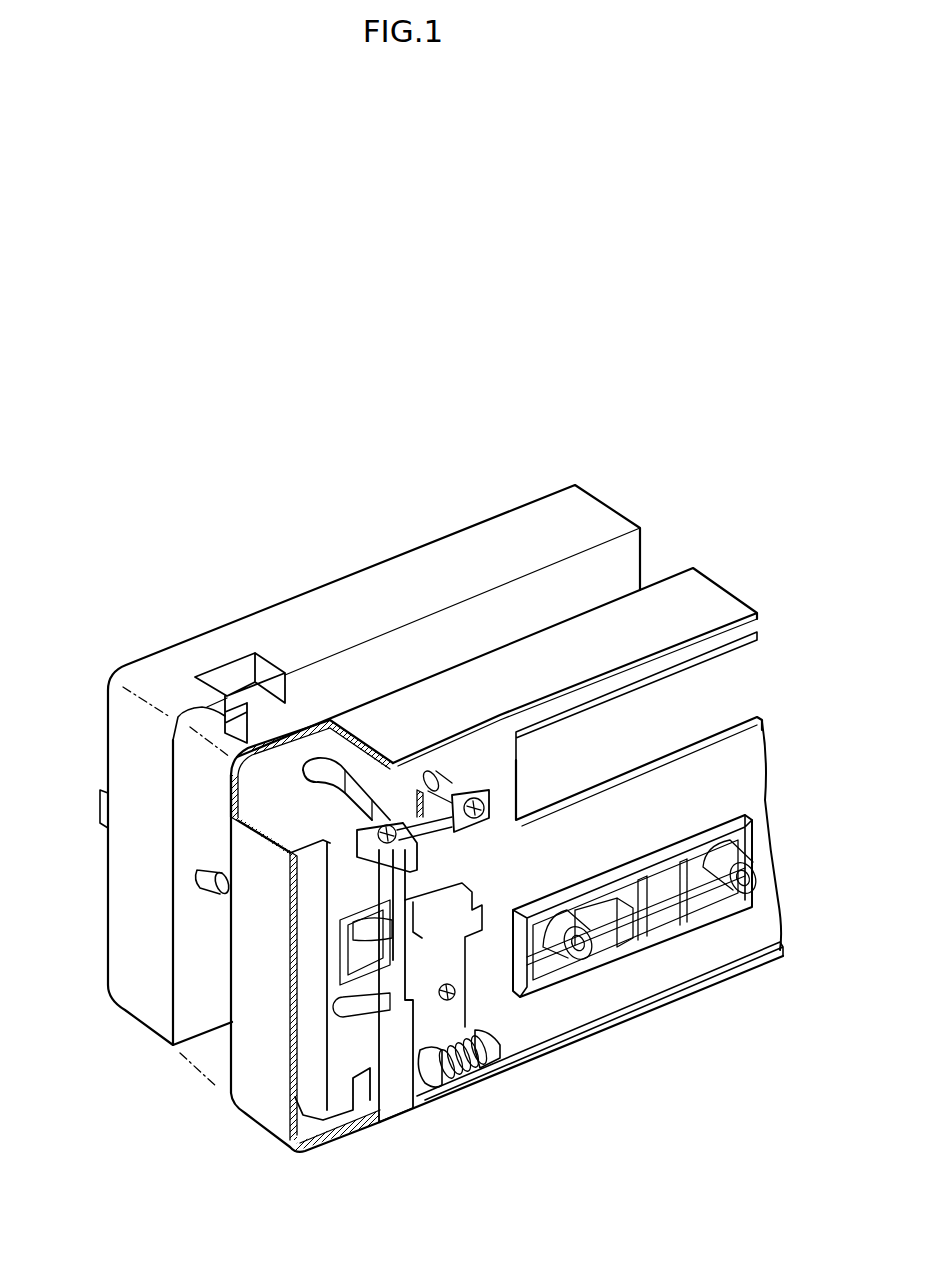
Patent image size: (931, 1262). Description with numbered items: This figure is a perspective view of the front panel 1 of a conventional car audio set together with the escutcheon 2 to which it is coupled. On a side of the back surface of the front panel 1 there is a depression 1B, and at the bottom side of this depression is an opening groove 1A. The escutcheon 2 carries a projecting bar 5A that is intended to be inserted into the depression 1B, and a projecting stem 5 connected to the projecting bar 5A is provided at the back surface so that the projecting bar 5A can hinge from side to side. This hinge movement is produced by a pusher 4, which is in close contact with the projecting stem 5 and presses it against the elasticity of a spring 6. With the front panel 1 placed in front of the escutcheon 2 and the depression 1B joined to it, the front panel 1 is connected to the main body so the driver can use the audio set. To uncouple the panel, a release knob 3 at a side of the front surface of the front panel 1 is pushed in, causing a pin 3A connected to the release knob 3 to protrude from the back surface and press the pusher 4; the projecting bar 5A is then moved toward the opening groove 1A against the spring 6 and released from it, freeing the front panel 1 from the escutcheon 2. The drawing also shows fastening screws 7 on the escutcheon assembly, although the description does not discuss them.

The front panel 1 is at (443, 557).
The opening groove 1A is at (225, 717).
The depression 1B is at (227, 673).
The escutcheon 2 is at (707, 597).
The release knob 3 is at (100, 808).
The pin 3A is at (200, 880).
The pusher 4 is at (392, 887).
The projecting stem 5 is at (412, 955).
The projecting bar 5A is at (287, 773).
The spring 6 is at (480, 1073).
The screws 7 is at (480, 822).